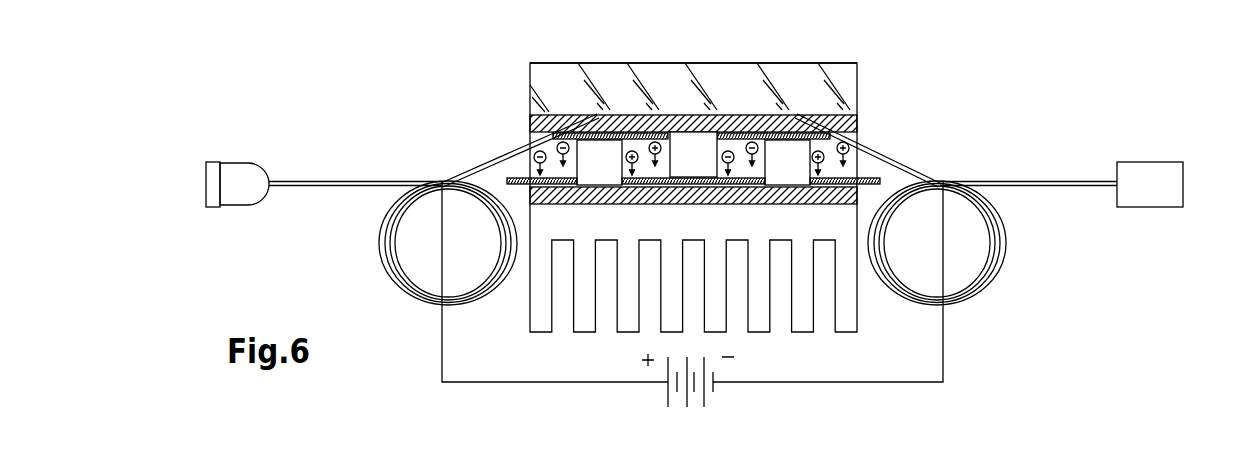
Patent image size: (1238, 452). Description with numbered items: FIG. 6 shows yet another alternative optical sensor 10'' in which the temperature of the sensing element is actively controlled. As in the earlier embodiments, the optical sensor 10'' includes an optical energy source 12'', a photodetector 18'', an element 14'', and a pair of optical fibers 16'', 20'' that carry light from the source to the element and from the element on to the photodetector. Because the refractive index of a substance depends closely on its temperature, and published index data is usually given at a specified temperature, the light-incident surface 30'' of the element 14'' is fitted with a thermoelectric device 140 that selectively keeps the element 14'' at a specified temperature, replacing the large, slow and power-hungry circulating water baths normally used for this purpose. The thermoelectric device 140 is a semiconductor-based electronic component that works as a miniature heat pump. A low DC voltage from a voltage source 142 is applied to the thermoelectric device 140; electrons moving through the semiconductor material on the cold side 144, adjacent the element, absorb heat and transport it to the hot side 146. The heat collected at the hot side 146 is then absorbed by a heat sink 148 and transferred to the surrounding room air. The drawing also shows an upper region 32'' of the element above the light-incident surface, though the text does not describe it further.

The alternative optical sensor 10'' is at (799, 125).
The optical energy source 12'' is at (239, 163).
The element 14'' is at (711, 65).
The optical fiber 16'' is at (434, 209).
The photodetector 18'' is at (1154, 152).
The optical fiber 20'' is at (960, 209).
The light-incident surface 30'' is at (691, 102).
The top plate 32'' is at (692, 46).
The thermoelectric device 140 is at (560, 219).
The voltage source 142 is at (692, 408).
The cold side 144 is at (530, 123).
The hot side 146 is at (873, 177).
The heat sink 148 is at (803, 275).